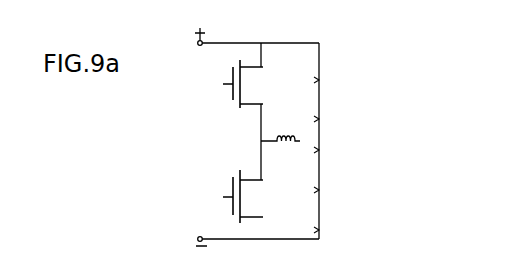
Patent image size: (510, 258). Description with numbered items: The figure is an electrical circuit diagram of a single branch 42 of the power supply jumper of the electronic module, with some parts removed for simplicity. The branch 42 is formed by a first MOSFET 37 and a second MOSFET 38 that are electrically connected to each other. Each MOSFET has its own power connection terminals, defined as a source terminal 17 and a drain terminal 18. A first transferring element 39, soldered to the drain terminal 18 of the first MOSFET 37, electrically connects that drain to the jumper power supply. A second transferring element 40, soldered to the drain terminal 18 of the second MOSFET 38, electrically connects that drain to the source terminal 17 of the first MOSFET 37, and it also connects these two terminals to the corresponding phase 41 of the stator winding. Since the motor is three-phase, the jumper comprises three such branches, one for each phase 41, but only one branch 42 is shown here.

The source terminal 17 is at (266, 103).
The drain terminal 18 is at (266, 67).
The first MOSFET 37 is at (221, 96).
The second MOSFET 38 is at (224, 212).
The first transferring element 39 is at (257, 55).
The second transferring element 40 is at (257, 134).
The phase 41 is at (297, 131).
The branch 42 is at (304, 70).